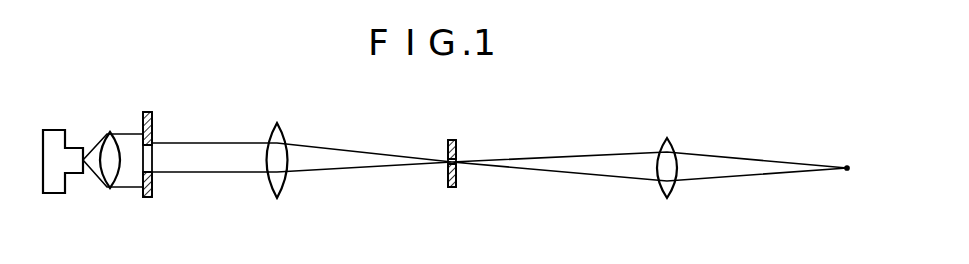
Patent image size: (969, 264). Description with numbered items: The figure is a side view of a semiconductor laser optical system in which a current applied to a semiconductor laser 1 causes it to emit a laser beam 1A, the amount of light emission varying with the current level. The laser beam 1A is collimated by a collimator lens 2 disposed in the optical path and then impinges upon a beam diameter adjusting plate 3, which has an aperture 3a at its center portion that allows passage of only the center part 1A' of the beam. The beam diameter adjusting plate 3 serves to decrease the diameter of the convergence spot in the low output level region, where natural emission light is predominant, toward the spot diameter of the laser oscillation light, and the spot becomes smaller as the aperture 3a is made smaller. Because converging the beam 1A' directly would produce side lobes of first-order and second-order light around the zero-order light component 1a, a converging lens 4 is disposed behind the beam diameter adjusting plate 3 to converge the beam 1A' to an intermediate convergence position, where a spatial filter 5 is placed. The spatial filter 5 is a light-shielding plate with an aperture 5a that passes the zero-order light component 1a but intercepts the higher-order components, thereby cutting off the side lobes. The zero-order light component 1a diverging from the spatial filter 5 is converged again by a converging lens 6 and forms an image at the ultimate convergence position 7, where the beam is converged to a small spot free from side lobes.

The semiconductor laser 1 is at (53, 190).
The laser beam 1A is at (113, 138).
The collimator lens 2 is at (110, 187).
The beam diameter adjusting plate 3 is at (147, 200).
The aperture 3a is at (152, 158).
The laser beam center portion 1A' is at (302, 180).
The converging lens 4 is at (285, 183).
The spatial filter 5 is at (447, 178).
The aperture 5a is at (457, 160).
The zero-order light component 1a is at (603, 152).
The converging lens 6 is at (668, 142).
The ultimate convergence position 7 is at (845, 167).